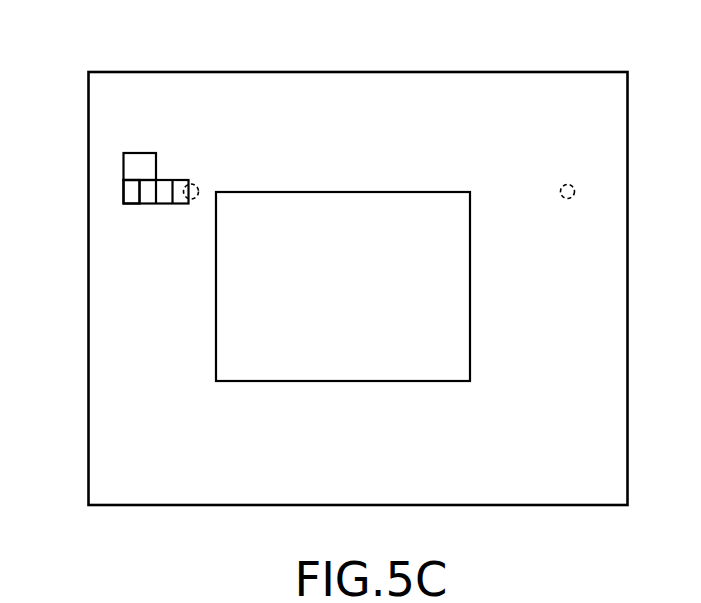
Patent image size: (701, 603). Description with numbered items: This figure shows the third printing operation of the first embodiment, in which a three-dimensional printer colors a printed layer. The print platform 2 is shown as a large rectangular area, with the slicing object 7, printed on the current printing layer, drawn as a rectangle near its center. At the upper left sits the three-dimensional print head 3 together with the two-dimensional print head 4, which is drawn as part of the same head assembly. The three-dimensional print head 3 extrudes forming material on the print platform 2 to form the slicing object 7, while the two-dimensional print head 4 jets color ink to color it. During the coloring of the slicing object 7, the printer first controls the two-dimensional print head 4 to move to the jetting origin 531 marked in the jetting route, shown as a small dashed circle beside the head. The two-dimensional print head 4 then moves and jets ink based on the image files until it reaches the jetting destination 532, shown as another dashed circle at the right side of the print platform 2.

The print platform 2 is at (456, 95).
The 3D print head 3 is at (141, 165).
The 2D print head 4 is at (130, 192).
The slicing object 7 is at (353, 205).
The jetting origin 531 is at (202, 178).
The jetting destination 532 is at (576, 174).